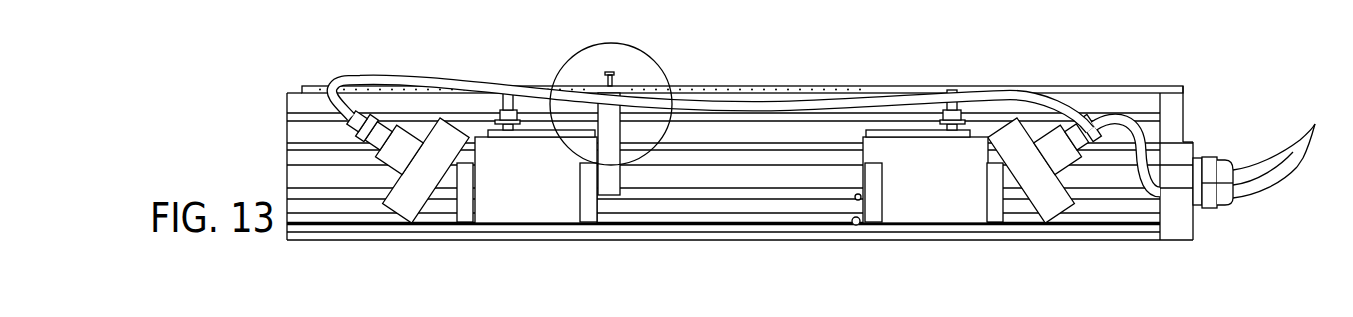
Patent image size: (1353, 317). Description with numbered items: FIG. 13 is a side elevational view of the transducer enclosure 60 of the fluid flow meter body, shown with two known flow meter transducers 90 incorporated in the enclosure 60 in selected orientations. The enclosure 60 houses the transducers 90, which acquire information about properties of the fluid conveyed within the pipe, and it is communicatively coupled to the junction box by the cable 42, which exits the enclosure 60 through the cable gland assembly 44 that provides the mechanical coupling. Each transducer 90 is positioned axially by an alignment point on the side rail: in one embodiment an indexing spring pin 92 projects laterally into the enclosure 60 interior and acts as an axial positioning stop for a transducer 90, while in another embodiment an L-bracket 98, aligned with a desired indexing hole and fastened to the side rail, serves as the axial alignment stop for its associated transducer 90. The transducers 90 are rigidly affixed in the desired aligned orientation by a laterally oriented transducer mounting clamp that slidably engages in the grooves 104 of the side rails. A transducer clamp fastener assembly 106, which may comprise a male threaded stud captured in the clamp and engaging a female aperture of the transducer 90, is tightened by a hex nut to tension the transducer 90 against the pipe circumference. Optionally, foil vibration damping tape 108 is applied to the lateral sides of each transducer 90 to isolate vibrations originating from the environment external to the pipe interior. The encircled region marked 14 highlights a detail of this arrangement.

The detail region of light fixture 14 is at (657, 63).
The cable 42 is at (1314, 130).
The cable gland assembly 44 is at (1201, 133).
The transducer enclosure 60 is at (348, 270).
The flow meter transducer 90 is at (533, 153).
The indexing spring pin 92 is at (855, 226).
The L-bracket 98 is at (612, 127).
The groove 104 is at (325, 148).
The transducer clamp fastener assembly 106 is at (503, 88).
The foil vibration damping tape 108 is at (463, 207).